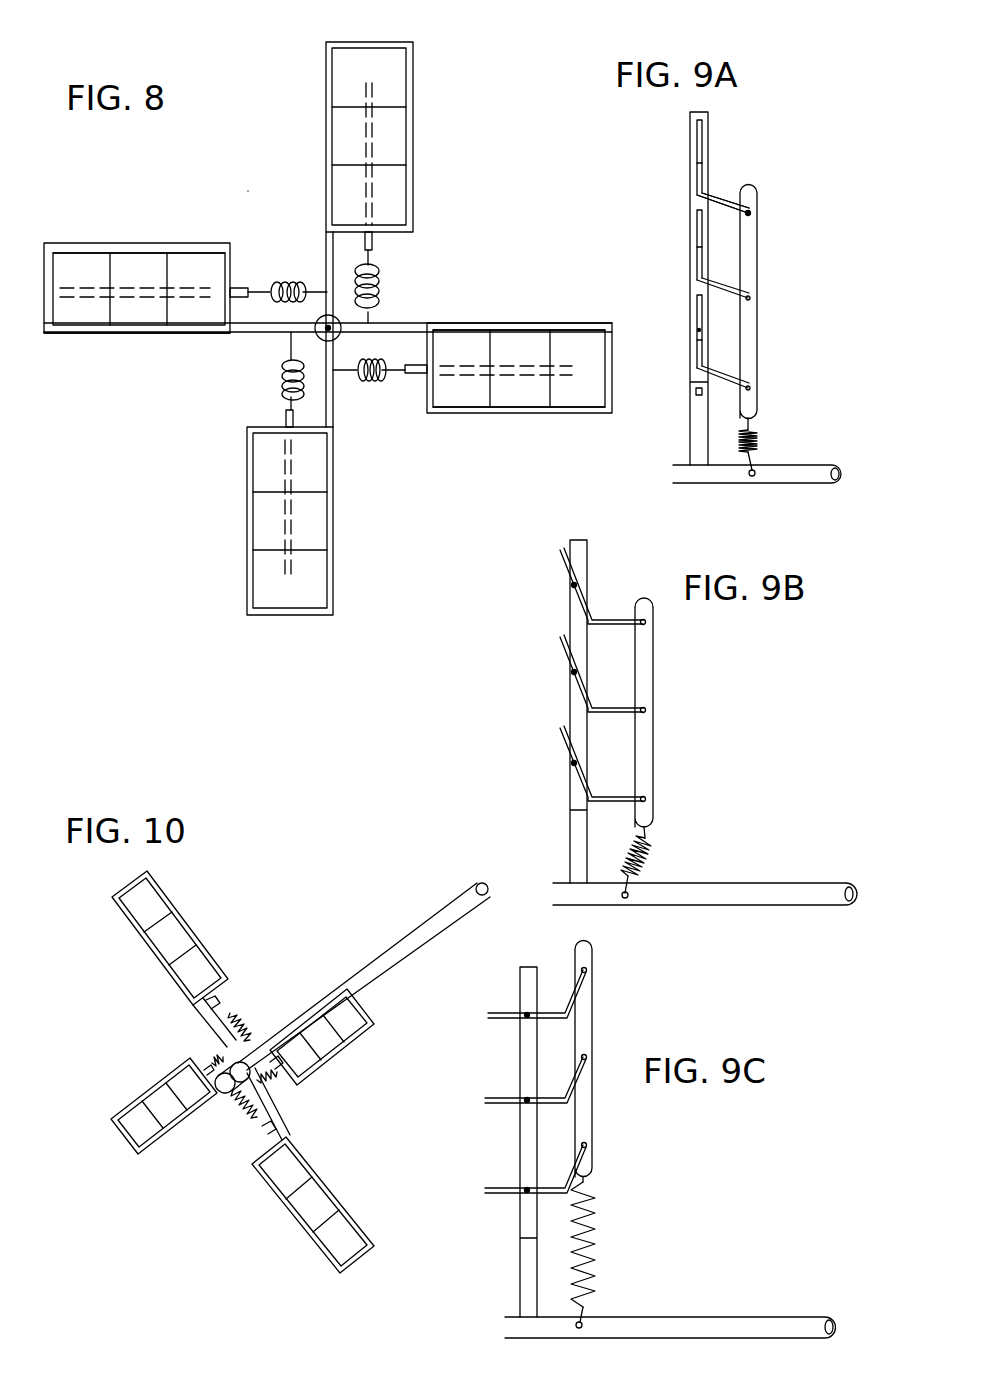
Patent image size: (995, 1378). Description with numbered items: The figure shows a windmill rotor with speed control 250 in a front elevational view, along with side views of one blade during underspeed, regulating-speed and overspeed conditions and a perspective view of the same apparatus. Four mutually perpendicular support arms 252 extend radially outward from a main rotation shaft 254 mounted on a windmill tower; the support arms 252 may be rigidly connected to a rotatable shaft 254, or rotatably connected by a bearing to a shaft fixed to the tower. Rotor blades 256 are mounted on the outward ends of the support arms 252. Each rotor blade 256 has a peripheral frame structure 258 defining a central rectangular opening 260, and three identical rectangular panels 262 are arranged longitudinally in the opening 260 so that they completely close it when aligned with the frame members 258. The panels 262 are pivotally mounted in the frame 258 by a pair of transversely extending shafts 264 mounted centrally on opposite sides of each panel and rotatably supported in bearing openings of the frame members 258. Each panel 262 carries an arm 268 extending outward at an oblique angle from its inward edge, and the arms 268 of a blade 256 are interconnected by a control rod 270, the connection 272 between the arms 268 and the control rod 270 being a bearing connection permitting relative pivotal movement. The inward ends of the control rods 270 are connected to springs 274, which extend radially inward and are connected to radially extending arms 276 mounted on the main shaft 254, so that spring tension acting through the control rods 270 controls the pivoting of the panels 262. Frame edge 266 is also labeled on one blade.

In FIG. 8, the windmill rotor with speed control 250 is at (252, 182).
In FIG. 8, the support arms 252 is at (258, 328).
In FIG. 9A, the support arms 252 is at (695, 405).
In FIG. 9B, the support arms 252 is at (575, 842).
In FIG. 9C, the support arms 252 is at (522, 1263).
In FIG. 8, the main rotation shaft 254 is at (334, 331).
In FIG. 9A, the main rotation shaft 254 is at (818, 475).
In FIG. 9B, the main rotation shaft 254 is at (773, 897).
In FIG. 9C, the main rotation shaft 254 is at (694, 1330).
In FIG. 10, the main rotation shaft 254 is at (438, 923).
In FIG. 8, the rotor blades 256 is at (126, 232).
In FIG. 10, the rotor blades 256 is at (143, 957).
In FIG. 8, the peripheral frame structure 258 is at (180, 218).
In FIG. 8, the central rectangular opening 260 is at (68, 328).
In FIG. 8, the rectangular panels 262 is at (505, 345).
In FIG. 9A, the rectangular panels 262 is at (697, 260).
In FIG. 9B, the rectangular panels 262 is at (565, 562).
In FIG. 9C, the rectangular panels 262 is at (505, 1098).
In FIG. 10, the rectangular panels 262 is at (313, 1205).
In FIG. 8, the transversely extending shafts 264 is at (607, 307).
In FIG. 9A, the transversely extending shafts 264 is at (697, 163).
In FIG. 9B, the transversely extending shafts 264 is at (575, 675).
In FIG. 9C, the transversely extending shafts 264 is at (525, 1012).
In FIG. 10, the transversely extending shafts 264 is at (242, 1071).
In FIG. 8, the vane frame edge 266 is at (527, 407).
In FIG. 8, the arm 268 is at (290, 512).
In FIG. 9A, the arm 268 is at (725, 200).
In FIG. 9B, the arm 268 is at (618, 620).
In FIG. 9C, the arm 268 is at (573, 1000).
In FIG. 8, the control rod 270 is at (372, 118).
In FIG. 9A, the control rod 270 is at (748, 266).
In FIG. 9B, the control rod 270 is at (650, 672).
In FIG. 9C, the control rod 270 is at (582, 1012).
In FIG. 9A, the connection 272 is at (752, 213).
In FIG. 8, the springs 274 is at (292, 287).
In FIG. 9A, the springs 274 is at (758, 443).
In FIG. 9B, the springs 274 is at (648, 848).
In FIG. 9C, the springs 274 is at (583, 1240).
In FIG. 10, the springs 274 is at (243, 1028).
In FIG. 9A, the radially extending arms 276 is at (755, 477).
In FIG. 9B, the radially extending arms 276 is at (628, 896).
In FIG. 9C, the radially extending arms 276 is at (582, 1328).
In FIG. 10, the radially extending arms 276 is at (250, 1045).